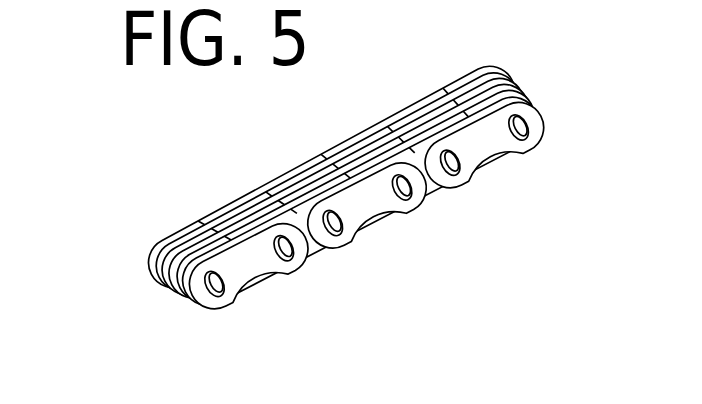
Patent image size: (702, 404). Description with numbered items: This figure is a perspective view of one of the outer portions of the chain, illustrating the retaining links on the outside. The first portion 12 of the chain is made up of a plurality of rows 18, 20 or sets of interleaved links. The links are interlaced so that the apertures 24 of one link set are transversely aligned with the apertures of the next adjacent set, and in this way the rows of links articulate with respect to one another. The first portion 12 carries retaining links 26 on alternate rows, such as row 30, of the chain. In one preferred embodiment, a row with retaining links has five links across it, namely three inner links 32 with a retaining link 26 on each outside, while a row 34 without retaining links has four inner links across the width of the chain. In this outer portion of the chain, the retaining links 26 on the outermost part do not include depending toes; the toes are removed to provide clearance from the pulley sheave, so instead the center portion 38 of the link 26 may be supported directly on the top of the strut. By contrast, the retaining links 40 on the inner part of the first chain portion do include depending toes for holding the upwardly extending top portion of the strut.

The first portion of the chain 12 is at (158, 222).
The row of links 18 is at (398, 246).
The row of links 20 is at (453, 214).
The aperture 24 is at (224, 298).
The retaining link 26 is at (265, 272).
The alternate row 30 is at (313, 123).
The inner link 32 is at (200, 227).
The row without retaining links 34 is at (375, 100).
The center portion of the retaining link 38 is at (489, 160).
The retaining link with toes 40 is at (438, 82).